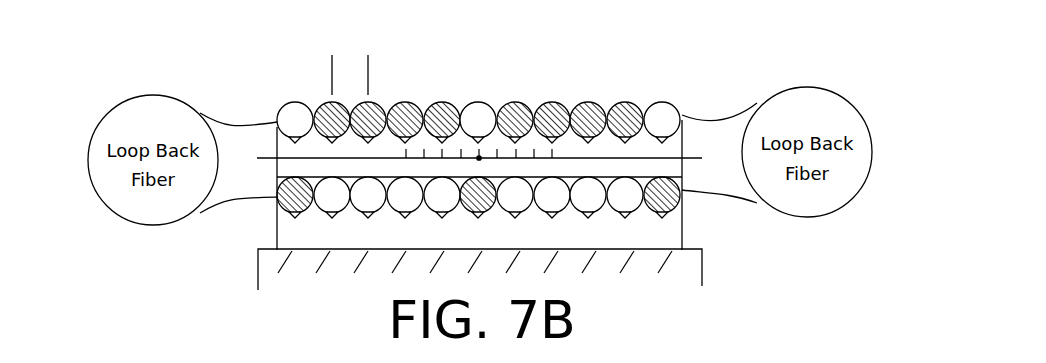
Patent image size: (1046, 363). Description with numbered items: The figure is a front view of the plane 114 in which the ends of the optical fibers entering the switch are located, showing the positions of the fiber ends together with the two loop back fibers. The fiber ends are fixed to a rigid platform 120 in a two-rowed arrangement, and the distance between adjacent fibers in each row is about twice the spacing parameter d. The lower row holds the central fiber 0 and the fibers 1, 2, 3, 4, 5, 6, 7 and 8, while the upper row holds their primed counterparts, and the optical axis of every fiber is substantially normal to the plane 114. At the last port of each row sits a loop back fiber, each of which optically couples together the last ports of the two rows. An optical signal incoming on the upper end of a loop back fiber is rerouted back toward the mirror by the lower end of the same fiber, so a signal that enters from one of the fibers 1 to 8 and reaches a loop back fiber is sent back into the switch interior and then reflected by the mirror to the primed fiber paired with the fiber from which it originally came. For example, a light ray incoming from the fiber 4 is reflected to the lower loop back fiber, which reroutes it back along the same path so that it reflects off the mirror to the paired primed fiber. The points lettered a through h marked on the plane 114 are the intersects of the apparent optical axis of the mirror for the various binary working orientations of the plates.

The plane 114 is at (599, 62).
The rigid platform 120 is at (702, 271).
The fiber spacing parameter d is at (290, 65).
The central fiber 0 is at (478, 197).
The fiber 1 is at (332, 197).
The fiber 2 is at (368, 197).
The fiber 3 is at (405, 197).
The fiber 4 is at (442, 197).
The fiber 5 is at (515, 197).
The fiber 6 is at (552, 197).
The fiber 7 is at (588, 197).
The fiber 8 is at (625, 197).